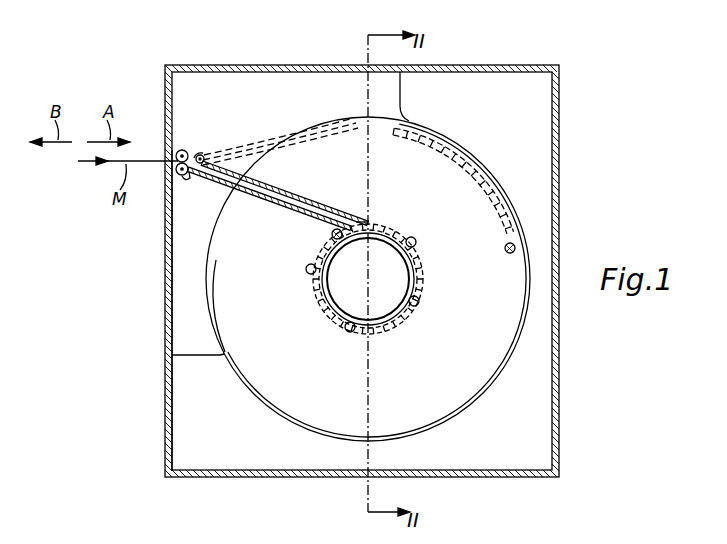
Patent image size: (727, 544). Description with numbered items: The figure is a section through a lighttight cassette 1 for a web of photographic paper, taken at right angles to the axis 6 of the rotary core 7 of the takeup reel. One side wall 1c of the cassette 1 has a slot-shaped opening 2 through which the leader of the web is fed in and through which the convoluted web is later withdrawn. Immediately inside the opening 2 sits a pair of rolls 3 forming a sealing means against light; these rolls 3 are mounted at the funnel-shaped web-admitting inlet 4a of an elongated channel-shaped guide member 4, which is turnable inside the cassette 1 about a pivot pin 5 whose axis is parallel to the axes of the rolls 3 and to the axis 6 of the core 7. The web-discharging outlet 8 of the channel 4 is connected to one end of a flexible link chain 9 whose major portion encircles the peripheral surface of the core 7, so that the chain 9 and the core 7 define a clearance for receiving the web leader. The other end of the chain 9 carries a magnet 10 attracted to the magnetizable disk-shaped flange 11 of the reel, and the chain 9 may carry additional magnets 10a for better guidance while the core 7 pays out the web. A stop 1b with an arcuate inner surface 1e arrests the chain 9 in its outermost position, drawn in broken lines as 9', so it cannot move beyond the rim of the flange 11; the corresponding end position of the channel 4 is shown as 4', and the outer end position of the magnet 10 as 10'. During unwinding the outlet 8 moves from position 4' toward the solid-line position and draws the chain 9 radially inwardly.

The cassette 1 is at (563, 111).
The stop 1b is at (414, 102).
The side wall 1c is at (165, 434).
The arcuate inner surface 1e is at (478, 392).
The opening 2 is at (175, 157).
The rolls 3 is at (183, 149).
The channel-shaped guide member 4 is at (277, 202).
The web-admitting inlet 4a is at (187, 180).
The broken-line end position of channel 4' is at (280, 133).
The pivot pin 5 is at (204, 156).
The axis of rotary core 6 is at (369, 280).
The rotary core 7 is at (398, 302).
The web-discharging outlet 8 is at (360, 220).
The link chain 9 is at (377, 279).
The outermost position of chain 9' is at (453, 175).
The magnet 10 is at (310, 239).
The outer end position of magnet 10' is at (503, 267).
The additional magnets 10a is at (414, 237).
The flange 11 is at (214, 309).